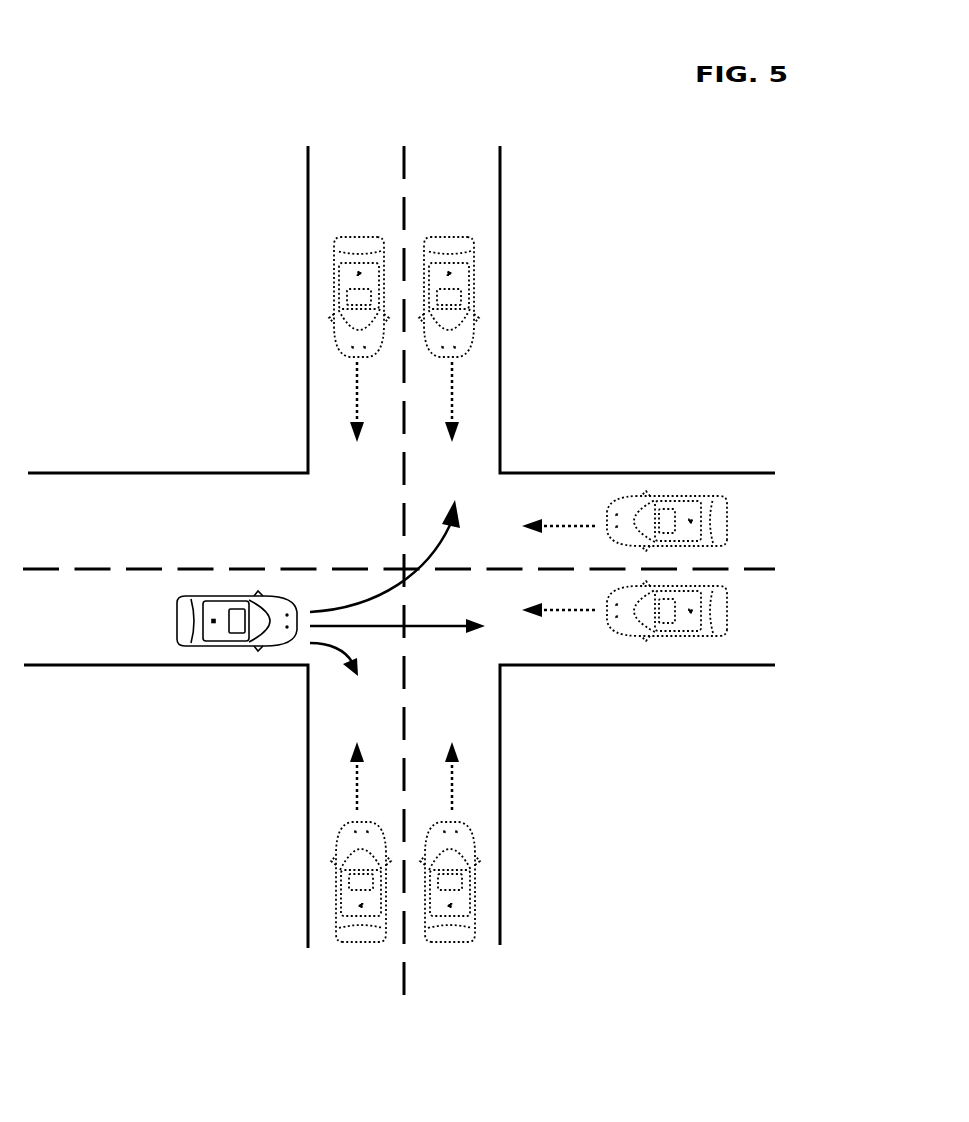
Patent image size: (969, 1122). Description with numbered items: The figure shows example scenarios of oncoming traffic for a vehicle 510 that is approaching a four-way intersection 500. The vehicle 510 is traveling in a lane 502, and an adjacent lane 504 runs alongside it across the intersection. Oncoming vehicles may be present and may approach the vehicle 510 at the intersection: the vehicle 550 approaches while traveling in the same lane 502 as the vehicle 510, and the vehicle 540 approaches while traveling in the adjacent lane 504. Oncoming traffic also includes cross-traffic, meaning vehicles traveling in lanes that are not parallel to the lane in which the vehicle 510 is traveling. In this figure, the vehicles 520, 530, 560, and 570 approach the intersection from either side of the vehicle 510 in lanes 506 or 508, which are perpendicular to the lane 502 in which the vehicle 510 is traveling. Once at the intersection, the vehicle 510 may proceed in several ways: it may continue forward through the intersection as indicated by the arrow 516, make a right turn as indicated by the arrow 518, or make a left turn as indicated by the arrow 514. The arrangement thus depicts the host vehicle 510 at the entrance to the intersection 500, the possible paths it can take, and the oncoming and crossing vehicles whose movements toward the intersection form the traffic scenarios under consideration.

The 4-way intersection 500 is at (680, 250).
The lane 502 is at (165, 634).
The adjacent lane 504 is at (165, 505).
The lane 506 is at (339, 309).
The lane 508 is at (435, 309).
The vehicle 510 is at (178, 630).
The arrow 514 is at (390, 590).
The arrow 516 is at (428, 628).
The arrow 518 is at (338, 646).
The vehicle 520 is at (337, 288).
The vehicle 530 is at (474, 290).
The vehicle 540 is at (670, 496).
The vehicle 550 is at (668, 638).
The vehicle 560 is at (476, 878).
The vehicle 570 is at (338, 880).